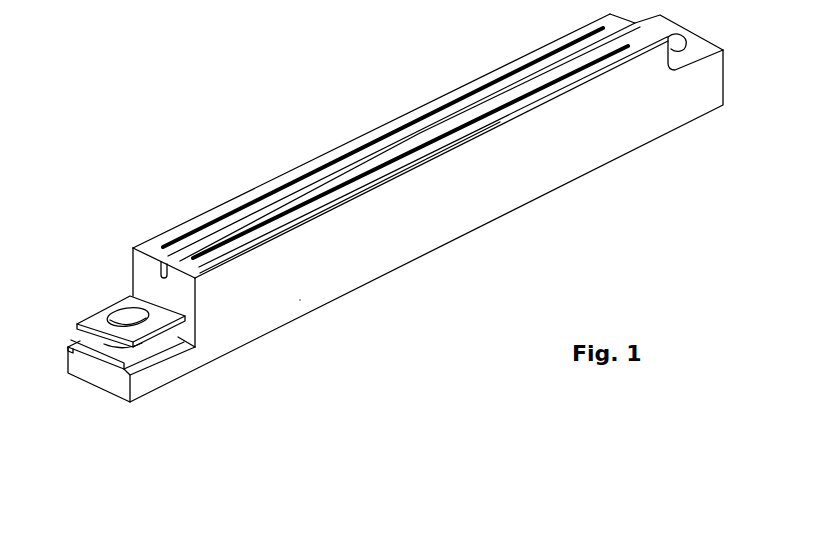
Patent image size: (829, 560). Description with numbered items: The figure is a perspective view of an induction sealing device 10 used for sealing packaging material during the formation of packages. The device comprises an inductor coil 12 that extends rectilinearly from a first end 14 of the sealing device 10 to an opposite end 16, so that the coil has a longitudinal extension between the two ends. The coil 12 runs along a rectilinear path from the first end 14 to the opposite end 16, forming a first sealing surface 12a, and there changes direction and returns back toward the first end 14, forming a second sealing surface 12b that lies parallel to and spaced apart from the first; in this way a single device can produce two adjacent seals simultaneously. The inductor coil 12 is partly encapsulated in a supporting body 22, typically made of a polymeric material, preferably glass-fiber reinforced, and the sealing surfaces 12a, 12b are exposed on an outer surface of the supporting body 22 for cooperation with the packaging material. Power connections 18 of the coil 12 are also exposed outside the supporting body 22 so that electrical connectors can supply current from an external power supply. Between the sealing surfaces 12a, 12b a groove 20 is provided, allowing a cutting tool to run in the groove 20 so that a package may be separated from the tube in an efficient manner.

The induction sealing device 10 is at (383, 228).
The inductor coil 12 is at (415, 146).
The first sealing surface 12a is at (500, 108).
The second sealing surface 12b is at (463, 96).
The first end 14 is at (193, 385).
The opposite end 16 is at (702, 133).
The power connections 18 is at (102, 308).
The groove 20 is at (162, 268).
The supporting body 22 is at (370, 232).